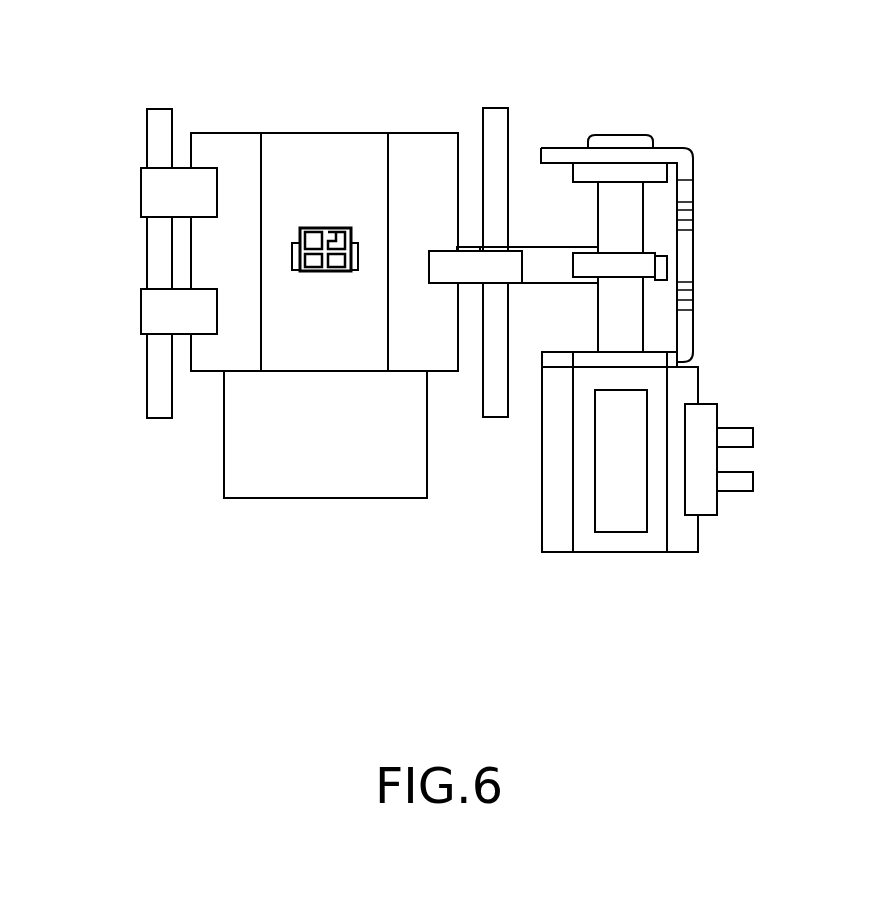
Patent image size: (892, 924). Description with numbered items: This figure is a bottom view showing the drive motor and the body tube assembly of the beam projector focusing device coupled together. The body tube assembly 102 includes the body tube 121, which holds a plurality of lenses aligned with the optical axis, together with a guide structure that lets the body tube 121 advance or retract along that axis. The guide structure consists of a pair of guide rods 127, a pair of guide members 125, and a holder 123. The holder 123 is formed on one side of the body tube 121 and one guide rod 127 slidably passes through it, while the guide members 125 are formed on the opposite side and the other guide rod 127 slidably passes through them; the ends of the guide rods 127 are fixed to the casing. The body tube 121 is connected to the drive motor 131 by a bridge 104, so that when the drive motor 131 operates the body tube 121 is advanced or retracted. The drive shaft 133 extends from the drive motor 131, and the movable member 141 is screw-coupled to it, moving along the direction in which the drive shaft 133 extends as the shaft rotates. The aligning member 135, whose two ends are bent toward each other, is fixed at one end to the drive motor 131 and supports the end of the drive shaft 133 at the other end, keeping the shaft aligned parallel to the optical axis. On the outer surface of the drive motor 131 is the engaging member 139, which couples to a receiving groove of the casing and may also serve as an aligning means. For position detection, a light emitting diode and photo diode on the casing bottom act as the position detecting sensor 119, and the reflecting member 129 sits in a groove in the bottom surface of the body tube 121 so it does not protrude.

The body tube assembly 102 is at (217, 478).
The bridge 104 is at (547, 265).
The position detecting sensor 119 is at (325, 262).
The body tube 121 is at (317, 147).
The holder 123 is at (448, 266).
The guide members 125 is at (155, 197).
The guide rods 127 is at (157, 258).
The reflecting member 129 is at (357, 245).
The drive motor 131 is at (655, 403).
The drive shaft 133 is at (632, 330).
The aligning member 135 is at (686, 163).
The engaging member 139 is at (705, 467).
The movable member 141 is at (620, 267).